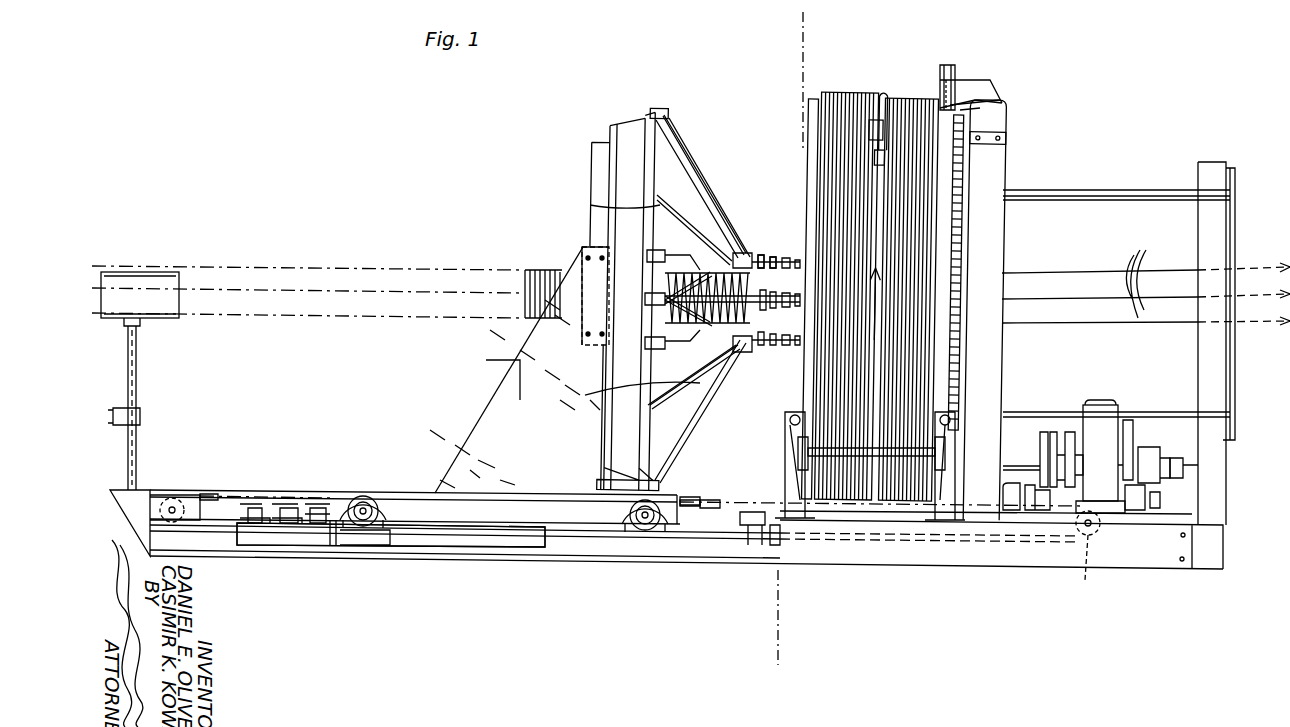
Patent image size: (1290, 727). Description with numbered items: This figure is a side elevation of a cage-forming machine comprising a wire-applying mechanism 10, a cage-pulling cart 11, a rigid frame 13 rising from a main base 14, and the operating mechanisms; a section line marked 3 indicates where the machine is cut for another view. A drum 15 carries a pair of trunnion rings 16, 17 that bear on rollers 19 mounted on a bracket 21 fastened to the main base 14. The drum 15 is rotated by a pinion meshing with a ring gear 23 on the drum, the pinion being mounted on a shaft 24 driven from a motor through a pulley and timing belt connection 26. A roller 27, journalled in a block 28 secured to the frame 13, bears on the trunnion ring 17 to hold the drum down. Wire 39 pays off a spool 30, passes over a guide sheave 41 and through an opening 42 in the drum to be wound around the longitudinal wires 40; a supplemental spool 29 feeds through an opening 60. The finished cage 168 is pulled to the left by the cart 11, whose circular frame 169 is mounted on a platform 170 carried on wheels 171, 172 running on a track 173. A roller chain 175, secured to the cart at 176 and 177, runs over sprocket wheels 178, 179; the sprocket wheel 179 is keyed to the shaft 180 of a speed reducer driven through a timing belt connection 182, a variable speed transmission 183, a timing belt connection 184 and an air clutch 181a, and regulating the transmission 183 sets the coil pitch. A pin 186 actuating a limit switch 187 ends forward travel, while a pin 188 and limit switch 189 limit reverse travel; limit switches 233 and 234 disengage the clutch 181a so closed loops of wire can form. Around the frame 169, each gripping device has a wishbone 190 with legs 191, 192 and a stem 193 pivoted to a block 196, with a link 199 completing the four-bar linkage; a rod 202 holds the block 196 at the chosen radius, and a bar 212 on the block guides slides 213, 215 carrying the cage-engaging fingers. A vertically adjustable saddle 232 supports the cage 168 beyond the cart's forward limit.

The section line 3- 3 is at (792, 50).
The wire-applying mechanism 10 is at (1093, 156).
The cage-pulling cart 11 is at (558, 135).
The rigid frame 13 is at (1017, 143).
The main base 14 is at (973, 575).
The drum 15 is at (968, 185).
The trunnion ring 16 is at (805, 103).
The trunnion ring 17 is at (968, 100).
The rollers 19 is at (785, 437).
The bracket 21 is at (808, 515).
The ring gear 23 is at (968, 112).
The shaft 24 is at (1010, 468).
The pulley and timing belt connection 26 is at (1045, 432).
The roller 27 is at (950, 65).
The block 28 is at (968, 82).
The spool 29 is at (830, 92).
The spool 30 is at (926, 98).
The wire 39 is at (895, 97).
The longitudinal wires 40 is at (361, 268).
The guide sheave 41 is at (880, 92).
The opening 42 is at (868, 172).
The opening 60 is at (870, 158).
The cage 168 is at (530, 300).
The circular frame 169 is at (667, 167).
The platform 170 is at (400, 492).
The wheels 171 is at (372, 532).
The wheels 172 is at (637, 535).
The track 173 is at (600, 535).
The roller chain 175 is at (214, 496).
The chain end attachment 176 is at (350, 498).
The chain end attachment 177 is at (690, 489).
The sprocket wheel 178 is at (162, 498).
The sprocket wheel 179 is at (1110, 565).
The shaft 180 is at (1076, 536).
The air clutch 181a is at (1148, 447).
The timing belt connection 182 is at (1060, 432).
The variable speed transmission 183 is at (1098, 403).
The timing belt connection 184 is at (1183, 468).
The pin 186 is at (336, 548).
The limit switch 187 is at (255, 508).
The pin 188 is at (712, 512).
The limit switch 189 is at (757, 548).
The wishbone 190 is at (717, 187).
The leg 191 is at (688, 262).
The leg 192 is at (695, 350).
The stem 193 is at (737, 235).
The block 196 is at (745, 350).
The link 199 is at (687, 177).
The rod 202 is at (623, 298).
The bar 212 is at (762, 252).
The slide 213 is at (774, 255).
The slide 215 is at (790, 258).
The saddle 232 is at (118, 272).
The limit switch 233 is at (318, 525).
The limit switch 234 is at (288, 508).